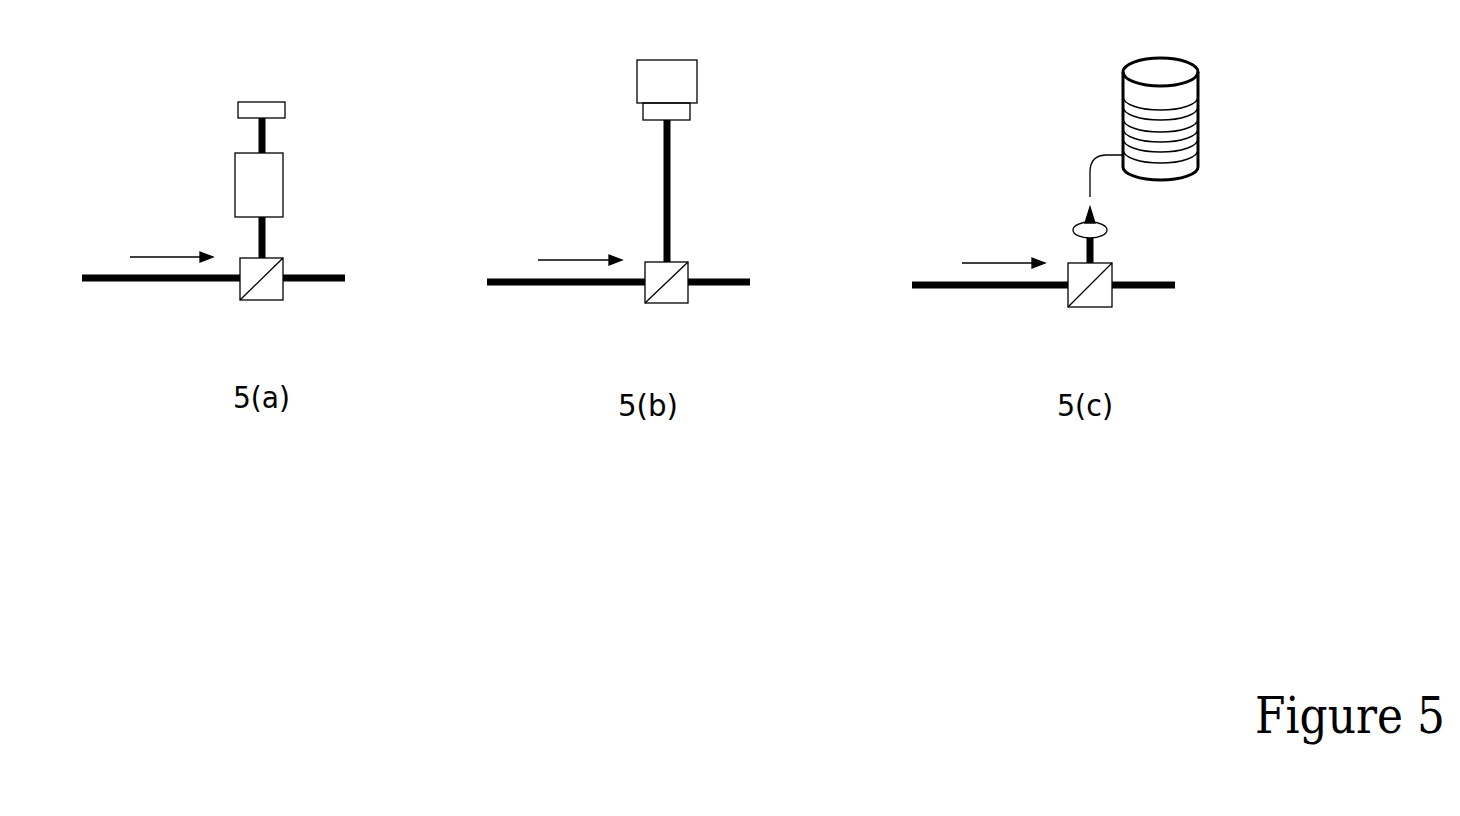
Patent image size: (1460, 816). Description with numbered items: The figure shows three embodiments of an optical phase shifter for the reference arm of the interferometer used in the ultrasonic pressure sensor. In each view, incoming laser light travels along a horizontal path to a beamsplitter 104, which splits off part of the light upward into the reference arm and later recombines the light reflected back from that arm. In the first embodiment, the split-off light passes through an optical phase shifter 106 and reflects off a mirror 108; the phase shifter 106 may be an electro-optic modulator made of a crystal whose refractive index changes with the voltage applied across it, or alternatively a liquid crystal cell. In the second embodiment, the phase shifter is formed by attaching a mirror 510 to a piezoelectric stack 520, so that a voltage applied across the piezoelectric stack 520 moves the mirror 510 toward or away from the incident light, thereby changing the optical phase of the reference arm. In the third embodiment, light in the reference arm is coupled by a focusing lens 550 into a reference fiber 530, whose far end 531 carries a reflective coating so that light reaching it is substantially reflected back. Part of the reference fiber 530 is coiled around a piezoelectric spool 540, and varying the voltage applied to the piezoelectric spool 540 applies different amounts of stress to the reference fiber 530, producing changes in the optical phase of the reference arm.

In FIG. 5A, the beamsplitter 104 is at (279, 266).
In FIG. 5B, the beamsplitter 104 is at (684, 269).
In FIG. 5C, the beamsplitter 104 is at (1108, 273).
In FIG. 5A, the optical phase shifter 106 is at (259, 185).
In FIG. 5A, the mirror 108 is at (261, 94).
In FIG. 5B, the mirror 510 is at (640, 115).
In FIG. 5B, the piezoelectric stack 520 is at (667, 81).
In FIG. 5C, the reference fiber 530 is at (1096, 163).
In FIG. 5C, the far end of the reference fiber 531 is at (1198, 90).
In FIG. 5C, the piezoelectric spool 540 is at (1160, 103).
In FIG. 5C, the focusing lens 550 is at (1069, 222).